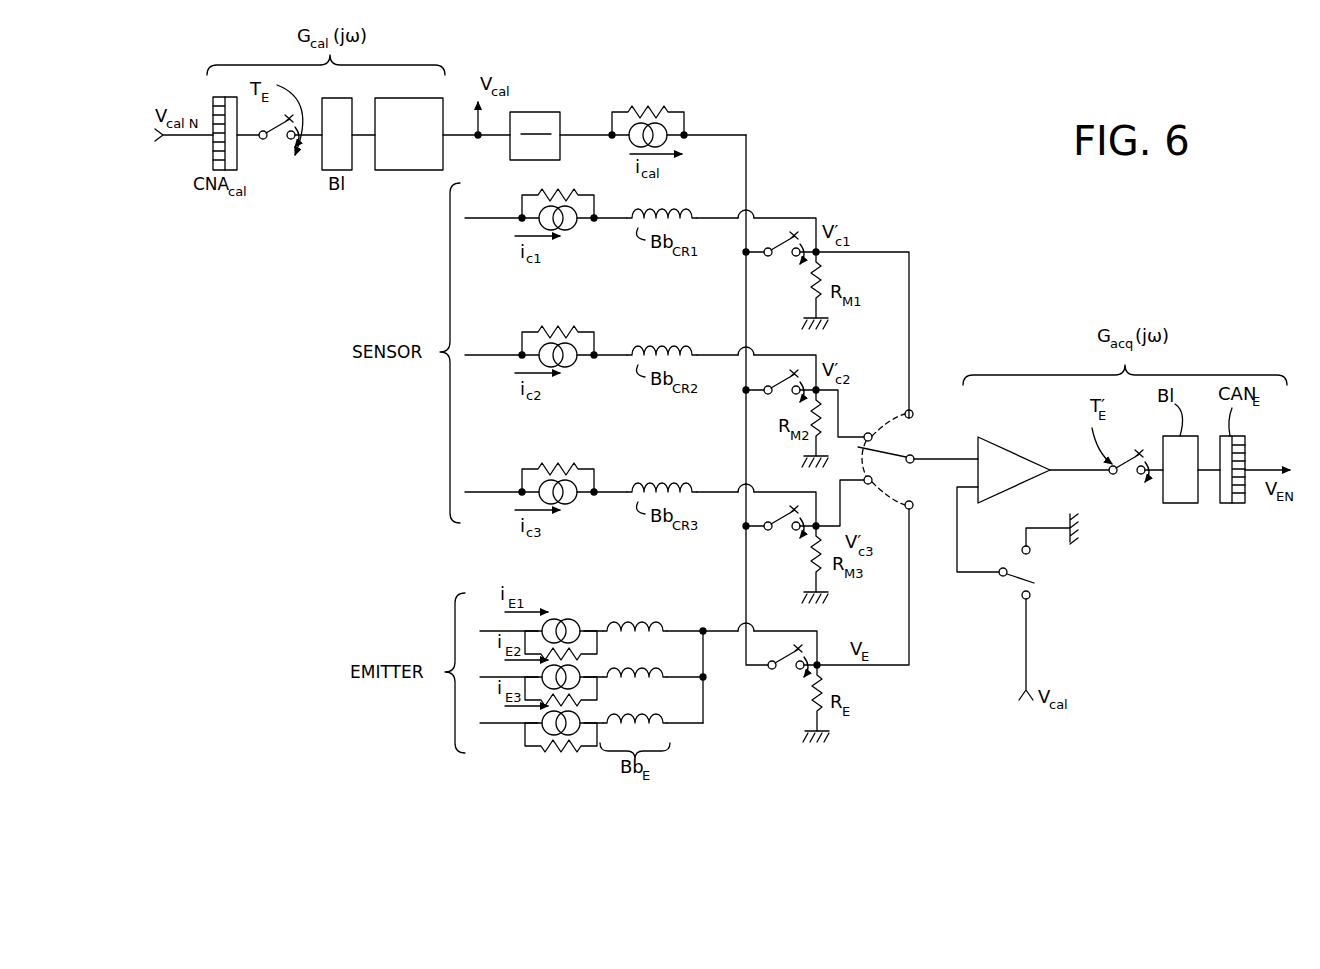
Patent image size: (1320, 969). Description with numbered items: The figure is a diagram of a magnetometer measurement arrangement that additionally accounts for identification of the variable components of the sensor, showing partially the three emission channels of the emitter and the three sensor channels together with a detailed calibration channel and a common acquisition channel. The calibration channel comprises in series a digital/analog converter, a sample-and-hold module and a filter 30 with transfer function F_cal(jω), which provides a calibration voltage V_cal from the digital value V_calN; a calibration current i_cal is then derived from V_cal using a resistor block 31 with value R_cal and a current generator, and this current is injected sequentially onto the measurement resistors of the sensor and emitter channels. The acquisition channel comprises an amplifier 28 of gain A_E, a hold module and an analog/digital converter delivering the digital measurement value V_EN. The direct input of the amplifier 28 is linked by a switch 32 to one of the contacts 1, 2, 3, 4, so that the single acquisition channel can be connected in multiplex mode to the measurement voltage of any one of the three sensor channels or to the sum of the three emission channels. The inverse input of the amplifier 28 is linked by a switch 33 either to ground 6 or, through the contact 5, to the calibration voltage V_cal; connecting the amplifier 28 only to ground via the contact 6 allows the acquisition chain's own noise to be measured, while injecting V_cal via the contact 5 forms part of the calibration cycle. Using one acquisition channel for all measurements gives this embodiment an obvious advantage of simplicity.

The amplifier 28 is at (1000, 498).
The filter 30 is at (407, 170).
The calibration resistor 1/R_cal 31 is at (543, 112).
The switch 32 is at (909, 458).
The switch 33 is at (1010, 592).
The contact 1 is at (921, 403).
The contact 2 is at (862, 423).
The contact 3 is at (868, 493).
The contact 4 is at (920, 515).
The contact 5 is at (1039, 598).
The ground 6 is at (1013, 542).